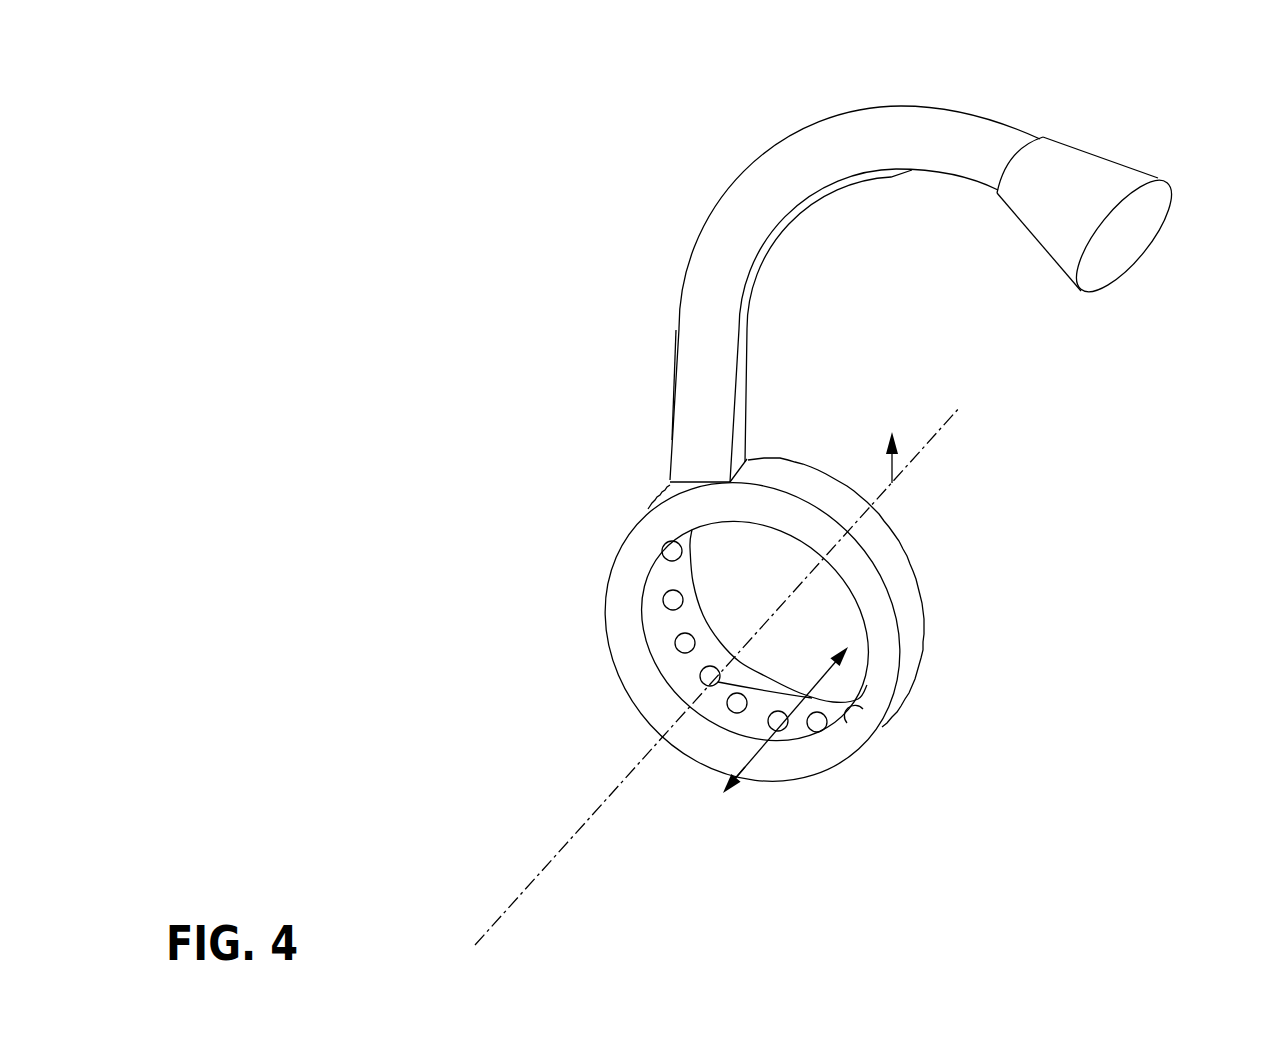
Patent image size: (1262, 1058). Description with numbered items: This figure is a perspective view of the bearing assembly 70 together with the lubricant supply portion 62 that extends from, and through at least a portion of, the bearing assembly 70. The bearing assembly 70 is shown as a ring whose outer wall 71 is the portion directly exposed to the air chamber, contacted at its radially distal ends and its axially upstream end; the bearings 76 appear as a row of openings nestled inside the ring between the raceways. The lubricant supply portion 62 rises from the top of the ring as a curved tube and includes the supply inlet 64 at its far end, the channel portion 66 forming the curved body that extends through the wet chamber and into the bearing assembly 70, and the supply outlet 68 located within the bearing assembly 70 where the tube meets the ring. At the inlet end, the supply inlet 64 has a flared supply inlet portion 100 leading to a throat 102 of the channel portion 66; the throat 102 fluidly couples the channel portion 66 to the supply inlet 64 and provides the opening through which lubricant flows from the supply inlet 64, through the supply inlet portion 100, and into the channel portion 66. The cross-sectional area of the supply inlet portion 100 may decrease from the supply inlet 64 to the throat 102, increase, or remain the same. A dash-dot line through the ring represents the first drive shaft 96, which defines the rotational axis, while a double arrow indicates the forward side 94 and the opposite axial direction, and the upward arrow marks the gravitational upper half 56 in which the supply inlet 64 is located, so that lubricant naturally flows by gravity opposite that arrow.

The gravitational upper half 56 is at (717, 676).
The lubricant supply portion 62 is at (730, 186).
The supply inlet 64 is at (1122, 233).
The channel portion 66 is at (715, 316).
The supply outlet 68 is at (708, 483).
The bearing assembly 70 is at (607, 557).
The outer wall 71 is at (633, 690).
The bearings 76 is at (684, 647).
The forward side 94 is at (745, 771).
The first drive shaft 96 is at (812, 698).
The supply inlet portion 100 is at (1088, 150).
The throat 102 is at (1012, 157).